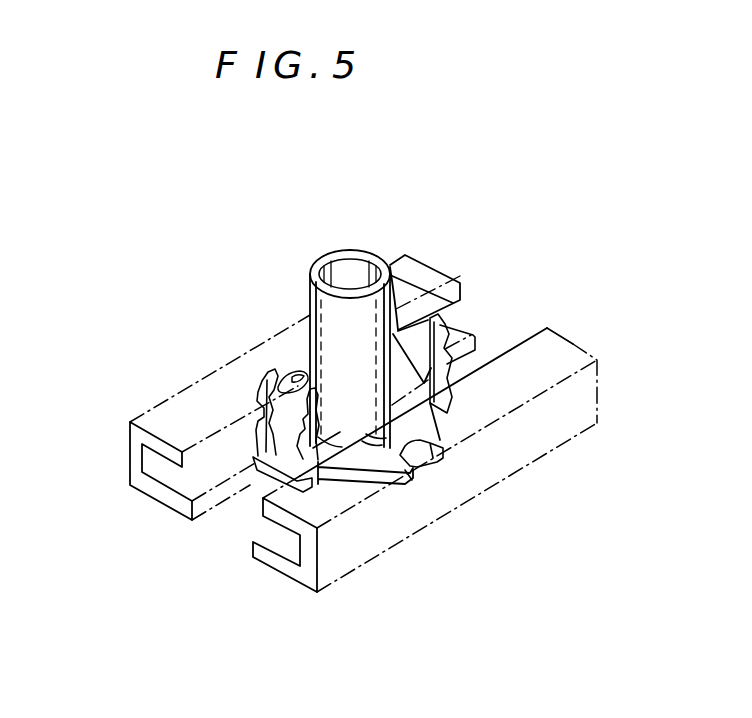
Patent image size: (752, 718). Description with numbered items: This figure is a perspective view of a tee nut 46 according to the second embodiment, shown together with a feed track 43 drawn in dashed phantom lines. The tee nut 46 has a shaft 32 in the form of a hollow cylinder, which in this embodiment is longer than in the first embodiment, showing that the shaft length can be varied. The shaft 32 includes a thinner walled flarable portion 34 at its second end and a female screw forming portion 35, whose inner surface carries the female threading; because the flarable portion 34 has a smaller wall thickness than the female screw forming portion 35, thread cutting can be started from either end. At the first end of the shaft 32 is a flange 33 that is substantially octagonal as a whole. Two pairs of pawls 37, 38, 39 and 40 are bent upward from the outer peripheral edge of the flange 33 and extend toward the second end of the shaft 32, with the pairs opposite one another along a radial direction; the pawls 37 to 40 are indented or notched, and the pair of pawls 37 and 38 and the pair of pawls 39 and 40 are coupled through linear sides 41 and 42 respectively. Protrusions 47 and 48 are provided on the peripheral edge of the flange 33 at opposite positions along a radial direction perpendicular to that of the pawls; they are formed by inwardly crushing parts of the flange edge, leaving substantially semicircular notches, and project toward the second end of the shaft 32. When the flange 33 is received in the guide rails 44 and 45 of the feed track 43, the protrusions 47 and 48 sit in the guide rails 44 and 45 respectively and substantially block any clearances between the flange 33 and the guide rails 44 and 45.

The shaft 32 is at (367, 250).
The flange 33 is at (386, 468).
The flarable portion 34 is at (420, 263).
The female screw forming portion 35 is at (348, 387).
The pawl 37 is at (272, 374).
The pawl 38 is at (310, 420).
The pawl 39 is at (438, 276).
The pawl 40 is at (447, 367).
The linear side 41 is at (262, 480).
The linear side 42 is at (442, 337).
The feed track 43 is at (127, 421).
The guide rail 44 is at (153, 500).
The guide rail 45 is at (273, 568).
The tee nut 46 is at (304, 244).
The protrusion 47 is at (300, 370).
The protrusion 48 is at (420, 442).